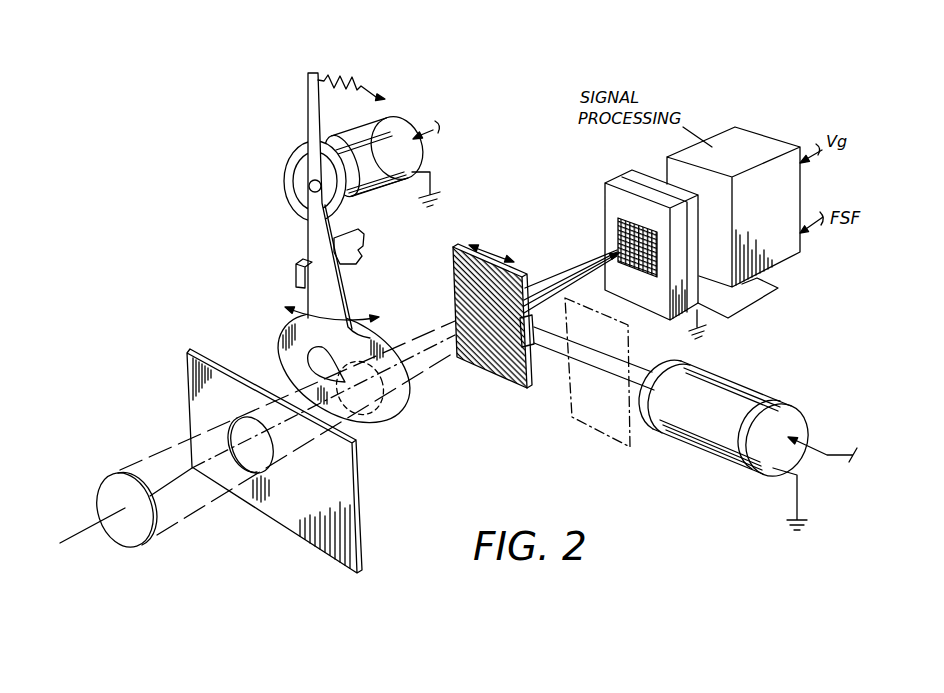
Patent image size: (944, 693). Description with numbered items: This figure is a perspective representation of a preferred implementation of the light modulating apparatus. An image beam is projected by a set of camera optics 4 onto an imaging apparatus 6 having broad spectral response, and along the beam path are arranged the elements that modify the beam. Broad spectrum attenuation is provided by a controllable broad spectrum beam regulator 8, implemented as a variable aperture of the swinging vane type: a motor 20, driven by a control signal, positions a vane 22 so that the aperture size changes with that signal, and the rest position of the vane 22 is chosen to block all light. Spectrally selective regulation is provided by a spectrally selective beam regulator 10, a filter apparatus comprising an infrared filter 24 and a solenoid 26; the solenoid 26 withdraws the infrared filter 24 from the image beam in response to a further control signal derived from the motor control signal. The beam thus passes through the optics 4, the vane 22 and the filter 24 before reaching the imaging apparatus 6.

The camera optics 4 is at (108, 493).
The imaging apparatus 6 is at (612, 205).
The controllable broad spectrum beam regulator 8 is at (347, 262).
The spectrally selective beam regulator 10 is at (673, 387).
The motor 20 is at (386, 125).
The vane 22 is at (385, 407).
The infrared filter 24 is at (497, 367).
The solenoid 26 is at (696, 441).